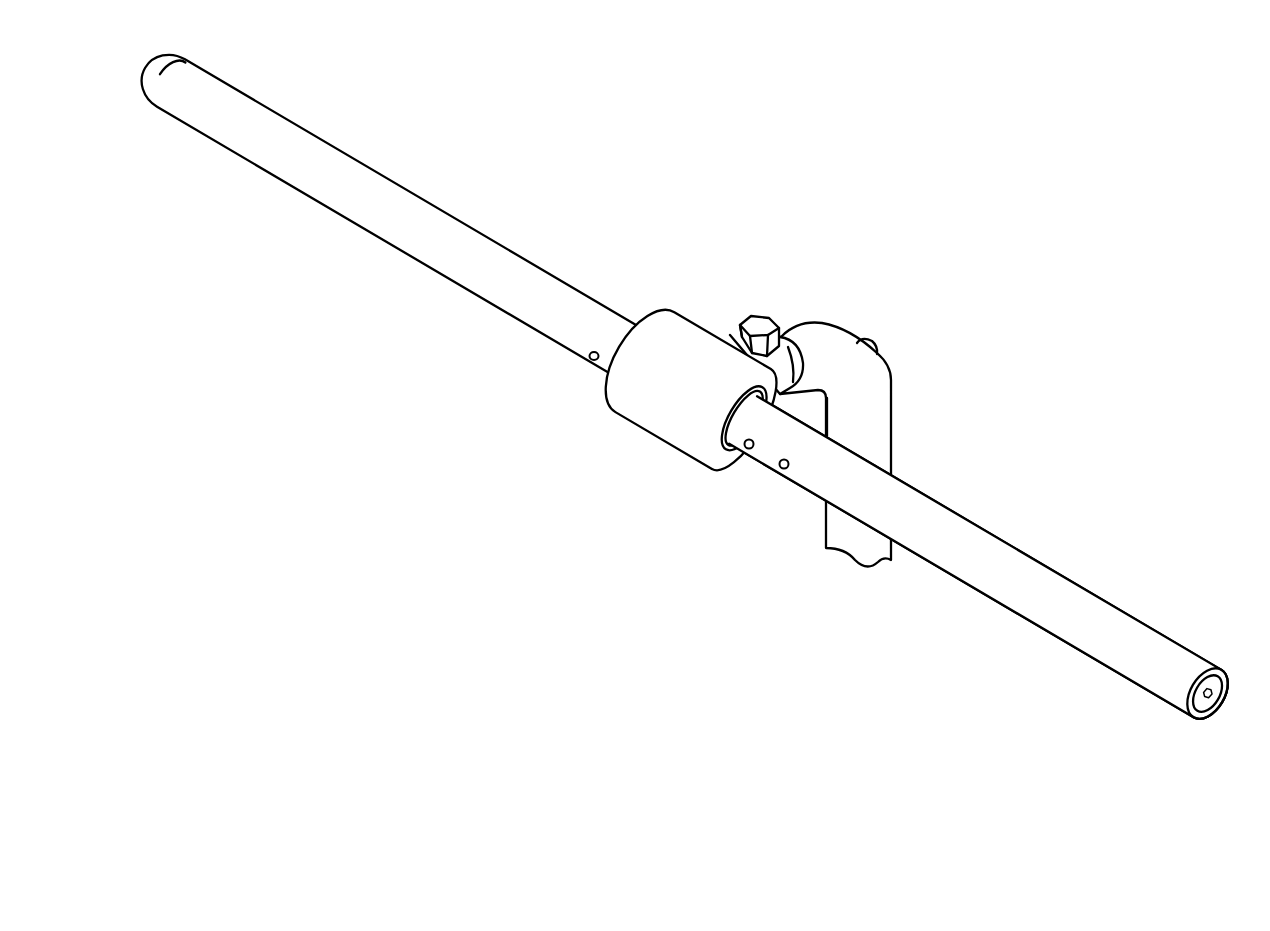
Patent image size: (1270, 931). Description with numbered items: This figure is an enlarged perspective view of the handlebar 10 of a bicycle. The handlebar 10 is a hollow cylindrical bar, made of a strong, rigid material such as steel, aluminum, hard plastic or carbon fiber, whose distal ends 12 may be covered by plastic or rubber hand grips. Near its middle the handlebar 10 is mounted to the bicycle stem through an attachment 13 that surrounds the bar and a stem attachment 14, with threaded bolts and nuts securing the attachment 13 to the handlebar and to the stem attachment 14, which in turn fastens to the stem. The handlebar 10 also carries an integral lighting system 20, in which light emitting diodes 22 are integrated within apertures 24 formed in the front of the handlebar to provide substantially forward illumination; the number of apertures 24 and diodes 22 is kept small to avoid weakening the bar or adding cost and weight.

The handlebar 10 is at (513, 175).
The distal ends 12 is at (1103, 667).
The attachment 13 is at (628, 425).
The stem attachment 14 is at (832, 322).
The lighting system 20 is at (705, 483).
The light emitting diodes 22 is at (782, 469).
The apertures 24 is at (590, 362).